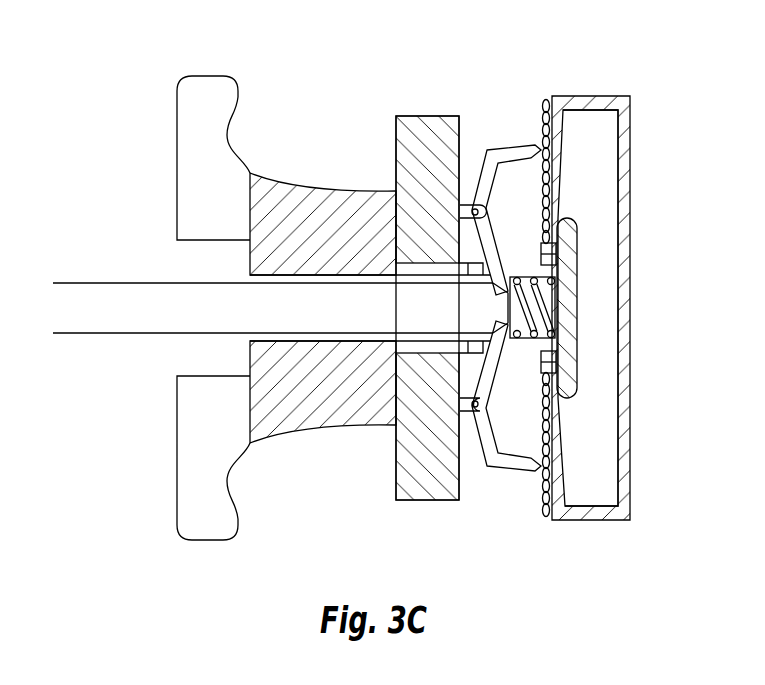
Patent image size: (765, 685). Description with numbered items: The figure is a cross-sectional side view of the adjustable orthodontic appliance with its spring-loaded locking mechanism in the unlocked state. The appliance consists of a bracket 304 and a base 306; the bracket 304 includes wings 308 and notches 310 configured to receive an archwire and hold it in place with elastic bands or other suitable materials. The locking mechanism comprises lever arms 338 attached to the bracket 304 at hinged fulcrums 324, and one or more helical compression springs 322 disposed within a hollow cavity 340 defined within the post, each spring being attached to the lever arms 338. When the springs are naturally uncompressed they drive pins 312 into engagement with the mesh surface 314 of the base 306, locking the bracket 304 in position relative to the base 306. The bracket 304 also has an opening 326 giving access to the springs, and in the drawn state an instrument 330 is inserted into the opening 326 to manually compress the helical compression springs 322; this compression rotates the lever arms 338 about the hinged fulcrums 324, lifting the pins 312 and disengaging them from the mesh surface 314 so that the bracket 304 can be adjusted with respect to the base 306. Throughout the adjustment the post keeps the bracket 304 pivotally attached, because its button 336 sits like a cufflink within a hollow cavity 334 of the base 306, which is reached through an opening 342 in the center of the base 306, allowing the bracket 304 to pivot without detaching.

The bracket 304 is at (349, 250).
The base 306 is at (630, 197).
The wings 308 is at (194, 93).
The notches 310 is at (180, 259).
The pins 312 is at (520, 143).
The mesh surface 314 is at (544, 106).
The helical compression springs 322 is at (538, 311).
The hinged fulcrums 324 is at (466, 200).
The opening 326 is at (265, 337).
The instrument 330 is at (87, 322).
The hollow cavity 334 is at (598, 463).
The button 336 is at (567, 280).
The lever arms 338 is at (492, 219).
The hollow cavity 340 is at (476, 263).
The opening 342 is at (542, 250).